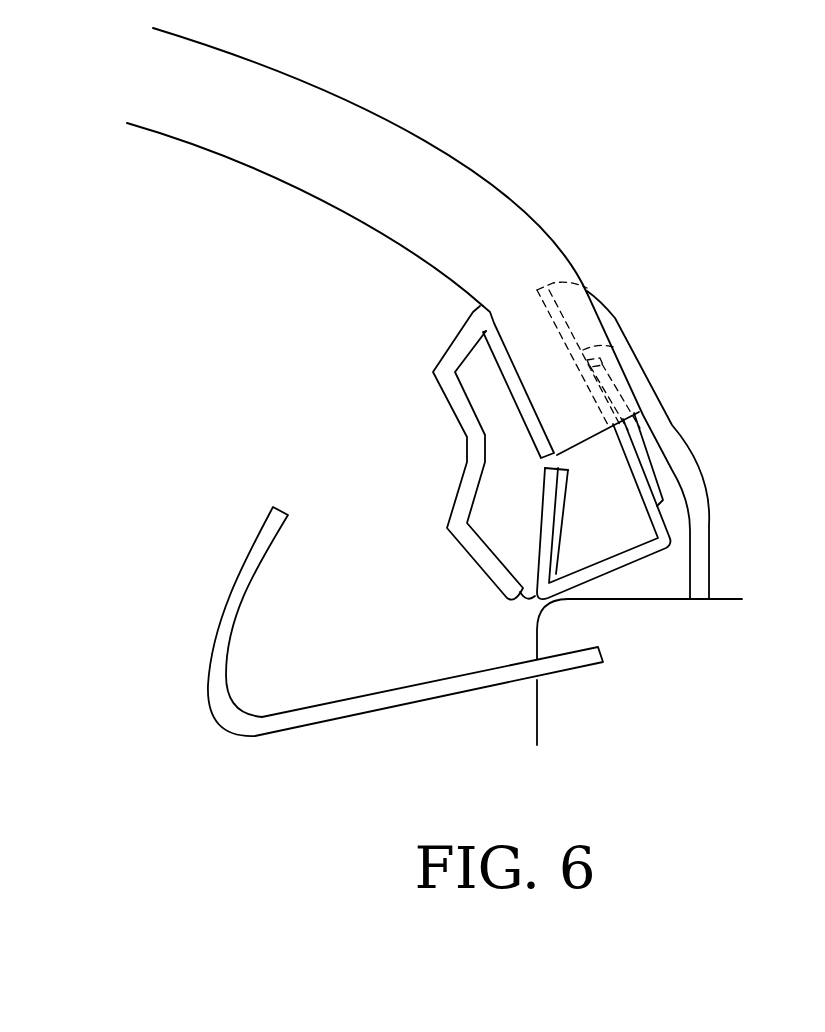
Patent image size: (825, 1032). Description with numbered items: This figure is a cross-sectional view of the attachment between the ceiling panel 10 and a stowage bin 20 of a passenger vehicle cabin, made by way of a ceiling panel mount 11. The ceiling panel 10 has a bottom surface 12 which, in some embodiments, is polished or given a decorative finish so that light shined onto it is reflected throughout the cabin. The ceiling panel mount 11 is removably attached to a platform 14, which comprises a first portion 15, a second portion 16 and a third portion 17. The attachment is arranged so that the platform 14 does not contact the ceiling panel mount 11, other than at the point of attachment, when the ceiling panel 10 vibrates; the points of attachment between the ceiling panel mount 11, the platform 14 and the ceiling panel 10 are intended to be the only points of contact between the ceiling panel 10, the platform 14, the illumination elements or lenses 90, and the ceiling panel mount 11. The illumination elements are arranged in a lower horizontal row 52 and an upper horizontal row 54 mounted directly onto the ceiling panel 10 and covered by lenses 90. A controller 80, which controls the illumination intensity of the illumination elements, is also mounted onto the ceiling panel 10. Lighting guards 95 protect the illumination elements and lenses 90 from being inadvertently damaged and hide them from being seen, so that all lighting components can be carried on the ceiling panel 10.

The ceiling panel 10 is at (176, 178).
The ceiling panel mount 11 is at (638, 370).
The bottom surface 12 is at (400, 243).
The platform 14 is at (658, 571).
The first portion 15 is at (567, 324).
The second portion 16 is at (635, 556).
The third portion 17 is at (560, 508).
The stowage bin 20 is at (716, 680).
The lower horizontal row 52 is at (533, 525).
The upper horizontal row 54 is at (512, 397).
The controller 80 is at (645, 462).
The lenses 90 is at (437, 461).
The lighting guards 95 is at (240, 591).